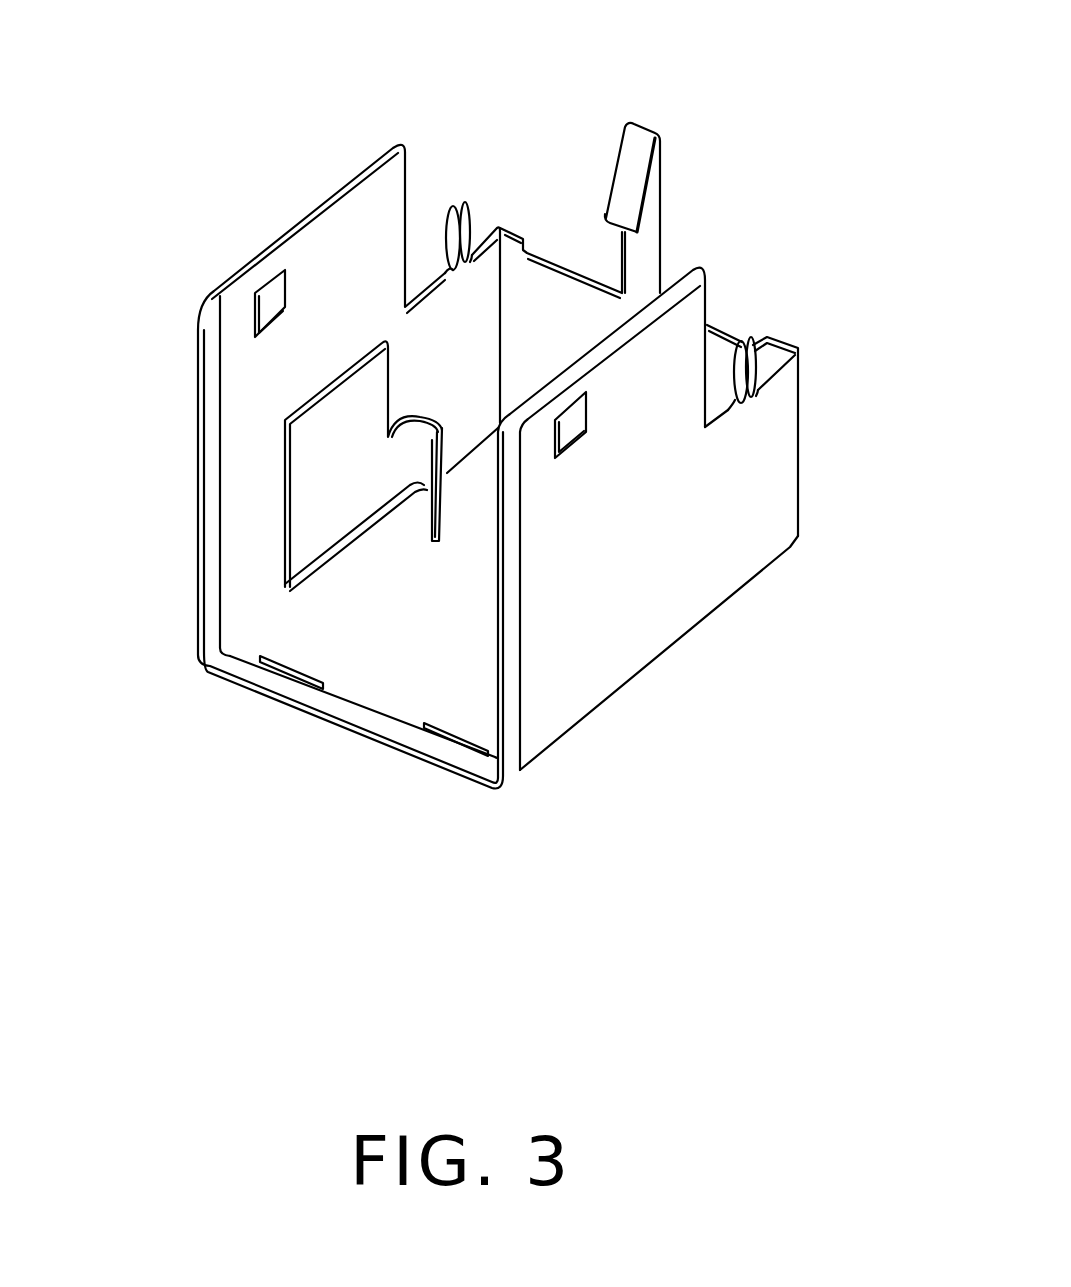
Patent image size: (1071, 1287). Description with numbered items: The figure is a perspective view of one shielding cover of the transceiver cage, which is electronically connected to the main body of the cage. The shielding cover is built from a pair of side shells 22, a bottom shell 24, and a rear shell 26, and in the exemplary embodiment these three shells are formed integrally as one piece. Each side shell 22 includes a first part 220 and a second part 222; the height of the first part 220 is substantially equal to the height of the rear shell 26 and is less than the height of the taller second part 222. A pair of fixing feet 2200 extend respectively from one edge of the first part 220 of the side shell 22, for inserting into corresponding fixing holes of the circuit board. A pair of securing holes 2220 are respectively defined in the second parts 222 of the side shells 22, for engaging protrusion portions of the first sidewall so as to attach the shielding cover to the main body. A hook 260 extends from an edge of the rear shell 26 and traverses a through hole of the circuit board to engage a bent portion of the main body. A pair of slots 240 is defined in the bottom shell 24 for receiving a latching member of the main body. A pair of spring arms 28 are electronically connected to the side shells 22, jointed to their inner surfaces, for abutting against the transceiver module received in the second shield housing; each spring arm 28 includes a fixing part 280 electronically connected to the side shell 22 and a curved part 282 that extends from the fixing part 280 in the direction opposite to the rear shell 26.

The side shell 22 is at (237, 457).
The first part 220 is at (762, 503).
The second part 222 is at (575, 580).
The fixing foot 2200 is at (472, 200).
The securing hole 2220 is at (268, 303).
The bottom shell 24 is at (408, 690).
The slot 240 is at (460, 747).
The rear shell 26 is at (718, 340).
The hook 260 is at (633, 155).
The spring arm 28 is at (214, 817).
The fixing part 280 is at (322, 507).
The curved part 282 is at (428, 518).